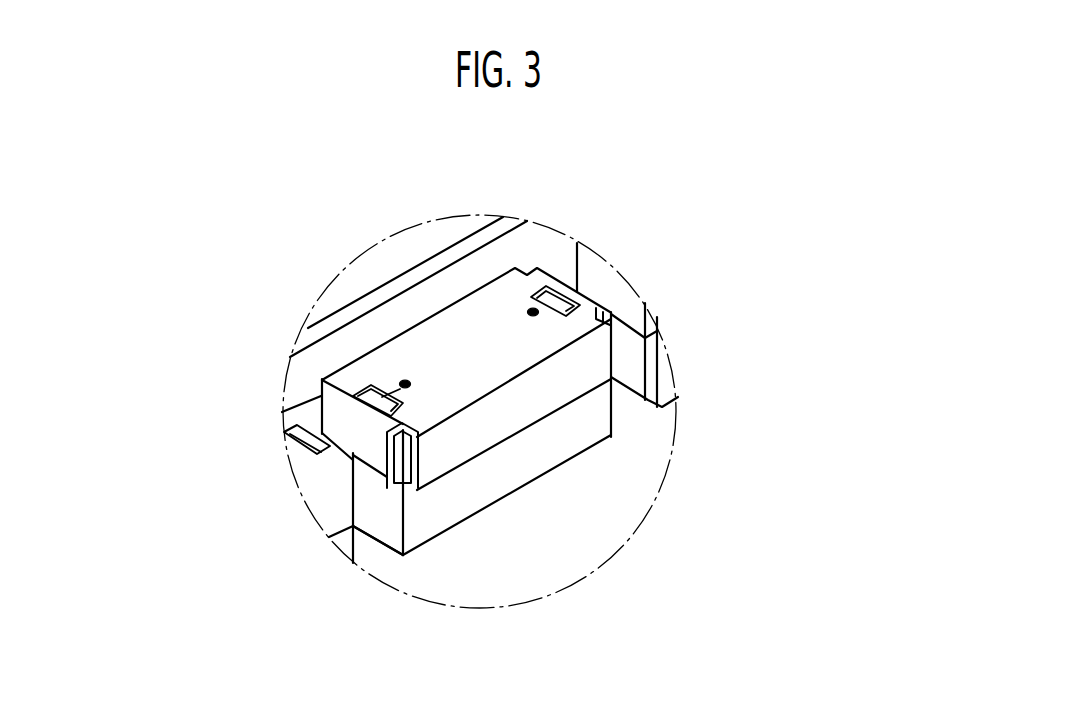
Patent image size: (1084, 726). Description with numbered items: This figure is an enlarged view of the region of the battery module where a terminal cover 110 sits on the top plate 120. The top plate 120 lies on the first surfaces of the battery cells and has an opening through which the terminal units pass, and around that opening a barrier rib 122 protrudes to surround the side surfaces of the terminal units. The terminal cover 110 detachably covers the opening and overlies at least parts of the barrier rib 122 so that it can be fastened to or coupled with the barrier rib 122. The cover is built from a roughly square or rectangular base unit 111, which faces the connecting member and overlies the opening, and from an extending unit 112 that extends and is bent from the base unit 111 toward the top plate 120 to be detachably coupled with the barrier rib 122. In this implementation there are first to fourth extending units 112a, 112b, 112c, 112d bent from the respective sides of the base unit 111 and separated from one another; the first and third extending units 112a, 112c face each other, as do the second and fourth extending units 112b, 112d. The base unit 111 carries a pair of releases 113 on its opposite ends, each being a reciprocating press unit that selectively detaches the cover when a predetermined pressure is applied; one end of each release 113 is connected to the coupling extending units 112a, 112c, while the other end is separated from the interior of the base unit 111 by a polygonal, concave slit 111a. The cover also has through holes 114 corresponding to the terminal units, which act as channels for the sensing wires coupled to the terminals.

The terminal cover 110 is at (345, 364).
The base unit 111 is at (384, 362).
The slit 111a is at (283, 438).
The extending unit 112 is at (818, 459).
The first extending unit 112a is at (597, 290).
The second extending unit 112b is at (500, 417).
The third extending unit 112c is at (343, 452).
The fourth extending unit 112d is at (497, 283).
The release 113 is at (335, 391).
The through hole 114 is at (532, 310).
The top plate 120 is at (476, 229).
The barrier rib 122 is at (432, 515).